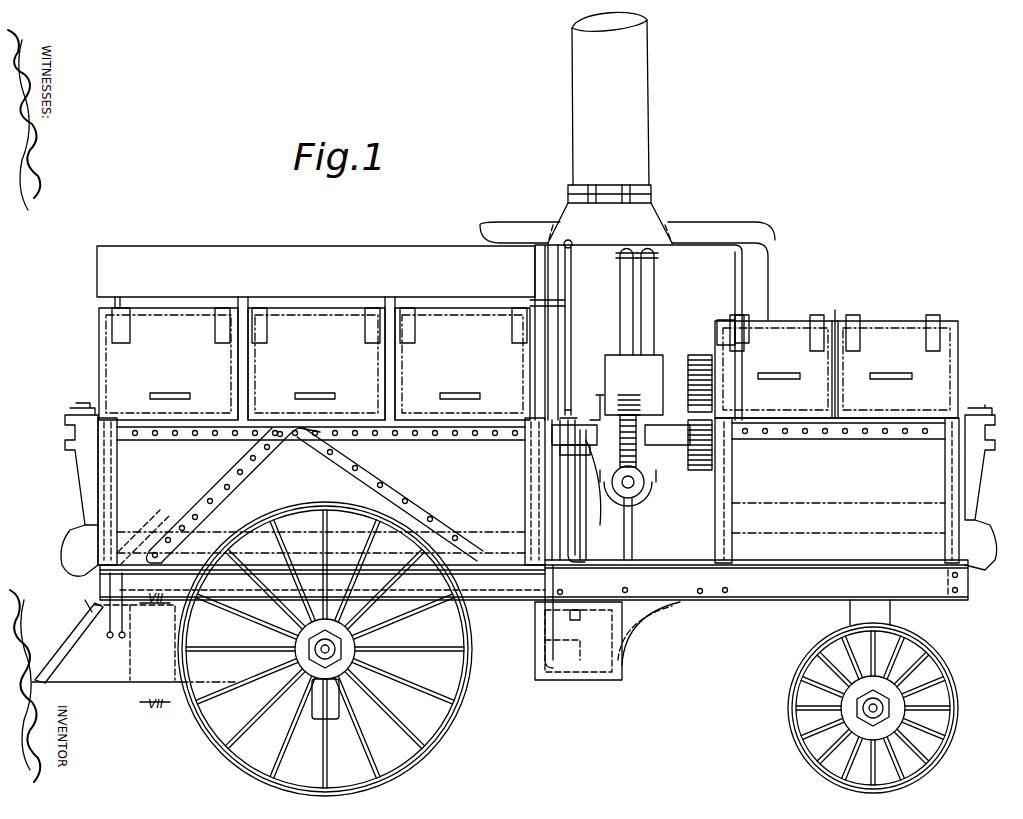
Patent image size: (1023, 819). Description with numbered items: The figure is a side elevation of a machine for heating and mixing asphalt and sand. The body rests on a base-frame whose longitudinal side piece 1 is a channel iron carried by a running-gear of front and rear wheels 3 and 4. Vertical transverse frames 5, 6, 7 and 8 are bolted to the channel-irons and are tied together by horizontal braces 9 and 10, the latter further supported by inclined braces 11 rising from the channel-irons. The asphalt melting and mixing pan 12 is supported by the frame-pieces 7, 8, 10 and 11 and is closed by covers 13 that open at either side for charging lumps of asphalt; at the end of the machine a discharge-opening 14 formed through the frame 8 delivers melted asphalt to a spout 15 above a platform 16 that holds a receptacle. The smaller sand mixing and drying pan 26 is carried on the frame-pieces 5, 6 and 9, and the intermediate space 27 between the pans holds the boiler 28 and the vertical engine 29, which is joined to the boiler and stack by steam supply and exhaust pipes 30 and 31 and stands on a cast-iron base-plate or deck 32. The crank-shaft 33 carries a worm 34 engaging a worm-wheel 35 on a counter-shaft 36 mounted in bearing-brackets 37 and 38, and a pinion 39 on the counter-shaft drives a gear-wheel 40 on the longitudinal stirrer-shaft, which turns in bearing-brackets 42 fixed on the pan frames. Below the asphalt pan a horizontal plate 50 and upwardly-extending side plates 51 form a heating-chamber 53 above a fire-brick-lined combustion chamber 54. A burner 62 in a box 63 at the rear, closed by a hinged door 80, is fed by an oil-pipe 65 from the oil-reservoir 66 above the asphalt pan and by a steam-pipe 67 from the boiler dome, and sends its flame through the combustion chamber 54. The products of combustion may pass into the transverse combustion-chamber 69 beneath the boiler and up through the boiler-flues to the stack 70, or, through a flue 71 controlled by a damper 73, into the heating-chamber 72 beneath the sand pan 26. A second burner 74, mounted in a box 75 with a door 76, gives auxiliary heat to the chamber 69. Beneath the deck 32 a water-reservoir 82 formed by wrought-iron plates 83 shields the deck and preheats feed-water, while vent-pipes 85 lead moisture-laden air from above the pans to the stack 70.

The longitudinal side piece 1 is at (534, 580).
The front wheel 3 is at (861, 708).
The rear wheel 4 is at (325, 649).
The vertical transverse frame 5 is at (946, 462).
The vertical transverse frame 6 is at (733, 485).
The vertical transverse frame 7 is at (525, 485).
The vertical transverse frame 8 is at (118, 480).
The horizontal brace 9 is at (836, 386).
The horizontal brace 10 is at (317, 445).
The inclined brace 11 is at (215, 480).
The asphalt melting and mixing pan 12 is at (321, 510).
The cover 13 is at (314, 364).
The discharge-opening 14 is at (144, 537).
The spout 15 is at (68, 547).
The platform 16 is at (78, 685).
The sand mixing and drying pan 26 is at (838, 475).
The intermediate space 27 is at (698, 399).
The boiler 28 is at (672, 270).
The engine 29 is at (634, 385).
The steam supply pipe 30 is at (654, 306).
The exhaust pipe 31 is at (620, 306).
The base-plate or deck 32 is at (586, 556).
The crank-shaft 33 is at (616, 482).
The worm 34 is at (650, 476).
The worm-wheel 35 is at (618, 398).
The counter-shaft 36 is at (592, 407).
The bearing-bracket 37 is at (641, 529).
The bearing-bracket 38 is at (548, 440).
The pinion 39 is at (733, 442).
The gear-wheel 40 is at (720, 380).
The bearing-bracket 42 is at (526, 464).
The horizontal plate 50 is at (782, 603).
The side plate 51 is at (522, 462).
The heating-chamber 53 is at (322, 558).
The combustion chamber 54 is at (367, 649).
The burner 62 is at (136, 636).
The box 63 is at (70, 654).
The oil-pipe 65 is at (572, 345).
The oil-reservoir 66 is at (316, 333).
The steam-pipe 67 is at (572, 380).
The transverse combustion-chamber 69 is at (578, 651).
The stack 70 is at (610, 127).
The flue 71 is at (651, 586).
The heating-chamber 72 is at (856, 550).
The damper 73 is at (556, 584).
The burner 74 is at (582, 620).
The box 75 is at (625, 660).
The door 76 is at (563, 660).
The hinged door 80 is at (80, 625).
The water-reservoir 82 is at (603, 572).
The horizontal wrought-iron plate 83 is at (680, 572).
The vent-pipe 85 is at (627, 258).